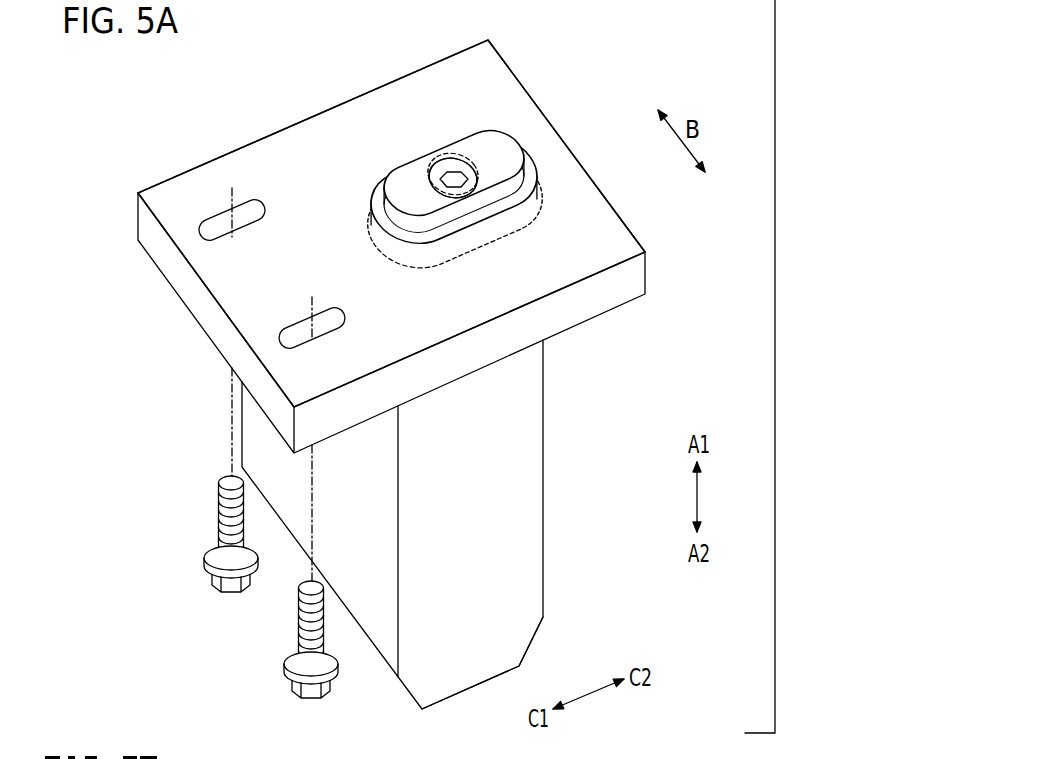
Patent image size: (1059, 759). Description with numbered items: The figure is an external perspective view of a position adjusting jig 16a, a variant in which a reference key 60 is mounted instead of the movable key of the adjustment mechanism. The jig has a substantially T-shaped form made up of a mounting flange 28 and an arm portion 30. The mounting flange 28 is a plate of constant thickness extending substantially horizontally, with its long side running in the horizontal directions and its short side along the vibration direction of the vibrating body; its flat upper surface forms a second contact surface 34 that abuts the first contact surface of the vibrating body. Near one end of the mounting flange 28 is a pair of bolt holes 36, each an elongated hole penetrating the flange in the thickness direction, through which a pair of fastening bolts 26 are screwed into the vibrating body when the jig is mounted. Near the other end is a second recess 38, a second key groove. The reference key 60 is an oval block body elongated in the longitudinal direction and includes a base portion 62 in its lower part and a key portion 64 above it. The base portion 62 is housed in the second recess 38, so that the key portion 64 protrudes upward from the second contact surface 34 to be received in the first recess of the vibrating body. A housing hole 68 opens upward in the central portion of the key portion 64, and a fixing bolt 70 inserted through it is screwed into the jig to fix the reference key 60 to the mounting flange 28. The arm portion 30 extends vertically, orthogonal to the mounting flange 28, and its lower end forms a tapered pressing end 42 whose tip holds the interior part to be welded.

The position adjusting jig 16a is at (226, 139).
The fastening bolts 26 is at (220, 590).
The mounting flange 28 is at (505, 87).
The second contact surface 34 is at (391, 223).
The arm portion 30 is at (518, 488).
The bolt holes 36 is at (253, 210).
The second recess 38 is at (520, 177).
The pressing end 42 is at (435, 693).
The reference key 60 is at (457, 128).
The base portion 62 is at (382, 223).
The key portion 64 is at (410, 168).
The housing hole 68 is at (440, 158).
The fixing bolt 70 is at (467, 183).